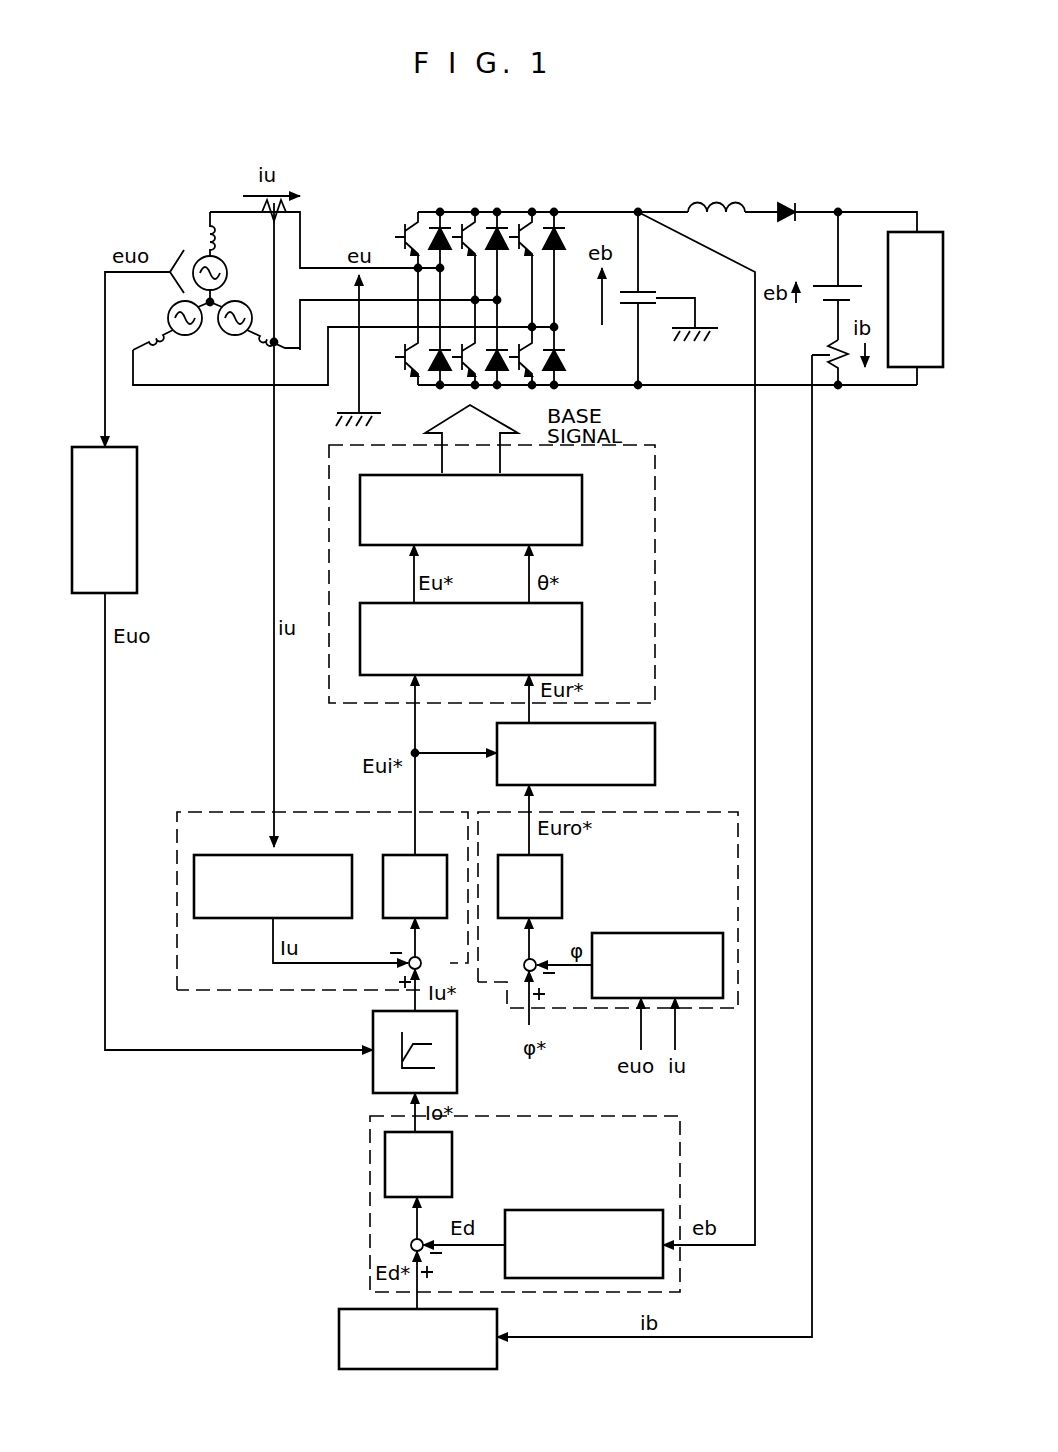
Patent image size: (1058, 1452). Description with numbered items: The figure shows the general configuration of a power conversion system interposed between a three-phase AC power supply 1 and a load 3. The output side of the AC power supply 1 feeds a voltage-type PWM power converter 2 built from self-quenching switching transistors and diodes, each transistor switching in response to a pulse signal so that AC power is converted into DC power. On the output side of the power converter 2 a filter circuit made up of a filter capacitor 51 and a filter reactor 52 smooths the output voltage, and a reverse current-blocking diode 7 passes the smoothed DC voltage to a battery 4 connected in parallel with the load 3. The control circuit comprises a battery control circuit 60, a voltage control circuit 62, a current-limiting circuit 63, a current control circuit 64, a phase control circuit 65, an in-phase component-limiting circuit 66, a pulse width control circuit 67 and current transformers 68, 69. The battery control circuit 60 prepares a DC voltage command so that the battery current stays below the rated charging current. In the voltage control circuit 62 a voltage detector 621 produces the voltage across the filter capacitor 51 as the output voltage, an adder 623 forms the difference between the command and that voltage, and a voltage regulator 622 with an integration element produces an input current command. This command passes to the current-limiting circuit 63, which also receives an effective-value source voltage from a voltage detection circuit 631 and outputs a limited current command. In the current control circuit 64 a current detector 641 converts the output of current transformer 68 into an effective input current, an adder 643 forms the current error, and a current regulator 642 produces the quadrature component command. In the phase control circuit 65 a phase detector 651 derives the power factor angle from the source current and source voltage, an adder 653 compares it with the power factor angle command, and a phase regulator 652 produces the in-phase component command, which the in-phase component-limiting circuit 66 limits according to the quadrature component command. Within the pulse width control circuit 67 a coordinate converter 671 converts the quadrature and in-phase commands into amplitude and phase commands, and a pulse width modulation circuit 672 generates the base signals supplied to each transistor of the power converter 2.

The three-phase AC power supply 1 is at (212, 236).
The power converter 2 is at (656, 260).
The load 3 is at (927, 368).
The battery 4 is at (845, 283).
The reverse current-blocking diode 7 is at (788, 203).
The filter capacitor 51 is at (628, 288).
The filter reactor 52 is at (718, 203).
The battery control circuit 60 is at (339, 1330).
The voltage control circuit 62 is at (368, 1160).
The current-limiting circuit 63 is at (373, 1028).
The current control circuit 64 is at (212, 812).
The phase control circuit 65 is at (640, 810).
The in-phase component-limiting circuit 66 is at (656, 750).
The pulse width control circuit 67 is at (655, 485).
The current transformer 68 is at (297, 211).
The current transformer 69 is at (848, 372).
The voltage detector 621 is at (608, 1210).
The voltage regulator 622 is at (453, 1166).
The adder 623 is at (411, 1243).
The voltage detection circuit 631 is at (138, 484).
The current detector 641 is at (228, 856).
The current regulator 642 is at (382, 856).
The adder 643 is at (410, 958).
The phase detector 651 is at (663, 933).
The phase regulator 652 is at (563, 883).
The adder 653 is at (537, 960).
The coordinate converter 671 is at (583, 632).
The pulse width modulation circuit 672 is at (583, 505).